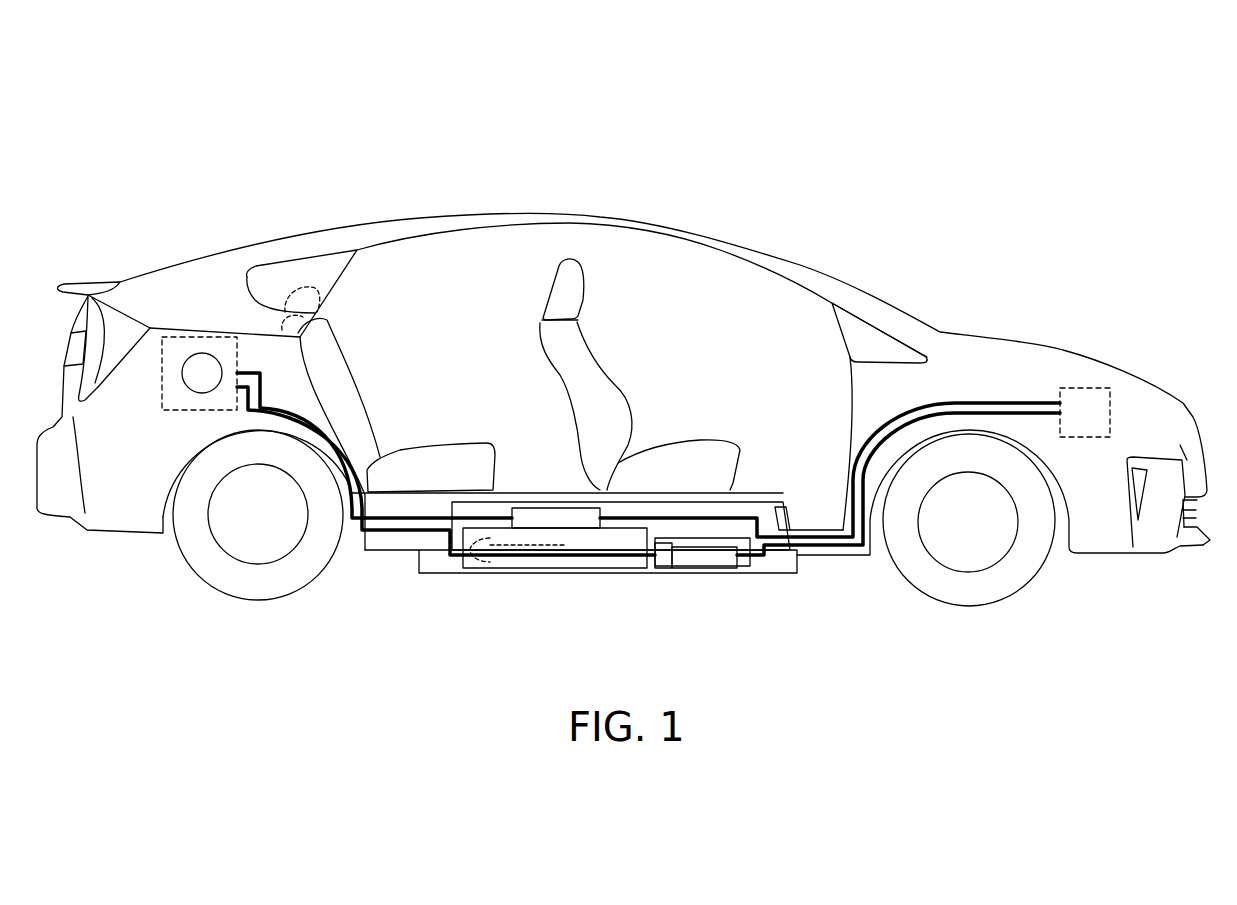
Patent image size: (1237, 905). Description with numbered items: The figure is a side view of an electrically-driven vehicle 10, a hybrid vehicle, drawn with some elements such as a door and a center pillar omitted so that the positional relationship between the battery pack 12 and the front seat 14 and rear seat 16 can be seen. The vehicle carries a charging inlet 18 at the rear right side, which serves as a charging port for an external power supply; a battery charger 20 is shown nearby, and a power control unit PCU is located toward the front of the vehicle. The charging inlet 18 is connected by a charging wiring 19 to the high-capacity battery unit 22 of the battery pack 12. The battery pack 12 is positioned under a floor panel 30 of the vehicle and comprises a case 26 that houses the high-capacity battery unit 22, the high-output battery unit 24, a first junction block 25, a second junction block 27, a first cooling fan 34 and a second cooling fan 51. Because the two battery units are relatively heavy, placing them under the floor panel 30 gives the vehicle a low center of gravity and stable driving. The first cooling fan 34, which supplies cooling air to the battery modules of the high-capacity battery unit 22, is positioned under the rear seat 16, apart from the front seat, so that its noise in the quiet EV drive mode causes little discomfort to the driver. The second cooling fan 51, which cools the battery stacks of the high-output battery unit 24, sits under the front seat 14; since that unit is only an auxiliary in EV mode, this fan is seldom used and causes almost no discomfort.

The electrically-driven vehicle 10 is at (487, 107).
The battery pack 12 is at (564, 544).
The front seat 14 is at (580, 324).
The rear seat 16 is at (333, 325).
The charging inlet 18 is at (197, 385).
The charging wiring 19 is at (282, 407).
The battery charger 20 is at (178, 347).
The high-capacity battery unit 22 is at (593, 568).
The high-output battery unit 24 is at (742, 568).
The first junction block 25 is at (560, 517).
The case 26 is at (427, 575).
The second junction block 27 is at (702, 565).
The floor panel 30 is at (781, 512).
The first cooling fan 34 is at (472, 567).
The second cooling fan 51 is at (663, 578).
The power control unit PCU is at (1083, 400).